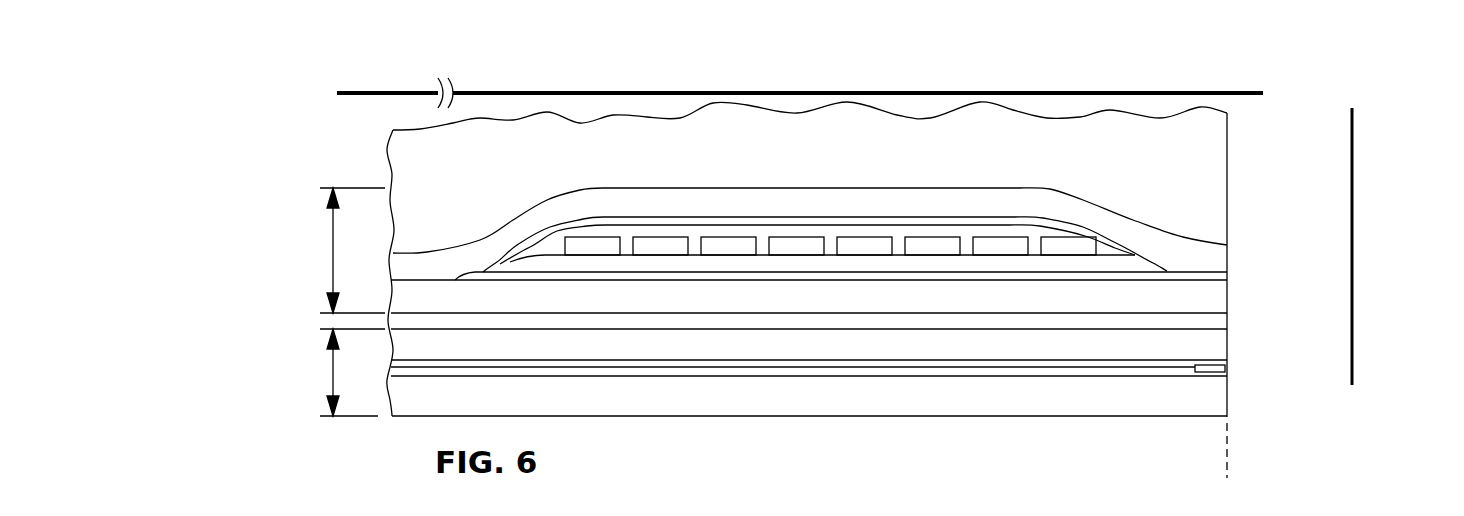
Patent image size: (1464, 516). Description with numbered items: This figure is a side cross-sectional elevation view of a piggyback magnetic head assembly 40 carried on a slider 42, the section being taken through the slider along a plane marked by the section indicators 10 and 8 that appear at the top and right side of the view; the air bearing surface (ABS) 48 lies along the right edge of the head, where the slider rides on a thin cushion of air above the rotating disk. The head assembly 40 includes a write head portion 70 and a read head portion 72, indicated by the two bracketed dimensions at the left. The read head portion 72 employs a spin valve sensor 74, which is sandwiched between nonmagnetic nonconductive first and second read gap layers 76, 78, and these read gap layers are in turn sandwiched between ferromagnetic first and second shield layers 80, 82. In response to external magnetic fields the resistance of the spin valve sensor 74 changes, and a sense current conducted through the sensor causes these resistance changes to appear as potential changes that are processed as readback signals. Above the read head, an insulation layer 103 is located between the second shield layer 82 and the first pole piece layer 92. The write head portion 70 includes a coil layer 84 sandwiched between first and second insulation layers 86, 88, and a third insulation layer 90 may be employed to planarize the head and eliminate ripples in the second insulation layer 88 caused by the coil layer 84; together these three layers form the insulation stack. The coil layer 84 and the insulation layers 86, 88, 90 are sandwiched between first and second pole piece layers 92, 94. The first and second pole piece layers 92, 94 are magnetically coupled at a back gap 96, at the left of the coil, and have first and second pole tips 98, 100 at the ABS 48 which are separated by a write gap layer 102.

The section line 8- 8 is at (1352, 375).
The section line 10- 10 is at (1255, 93).
The magnetic head assembly 40 is at (373, 143).
The slider 42 is at (1212, 144).
The air bearing surface (ABS) 48 is at (1227, 473).
The write head portion 70 is at (333, 256).
The read head portion 72 is at (333, 376).
The spin valve sensor 74 is at (1225, 368).
The first read gap layer 76 is at (880, 377).
The second read gap layer 78 is at (846, 361).
The first shield layer 80 is at (987, 400).
The second shield layer 82 is at (1095, 348).
The coil layer 84 is at (851, 243).
The first insulation layer 86 is at (765, 268).
The second insulation layer 88 is at (1111, 247).
The third insulation layer 90 is at (633, 219).
The first pole piece layer 92 is at (1142, 302).
The second pole piece layer 94 is at (1002, 196).
The back gap 96 is at (433, 279).
The first pole tip 98 is at (1227, 302).
The second pole tip 100 is at (1220, 254).
The write gap layer 102 is at (1227, 277).
The insulation layer 103 is at (1047, 321).